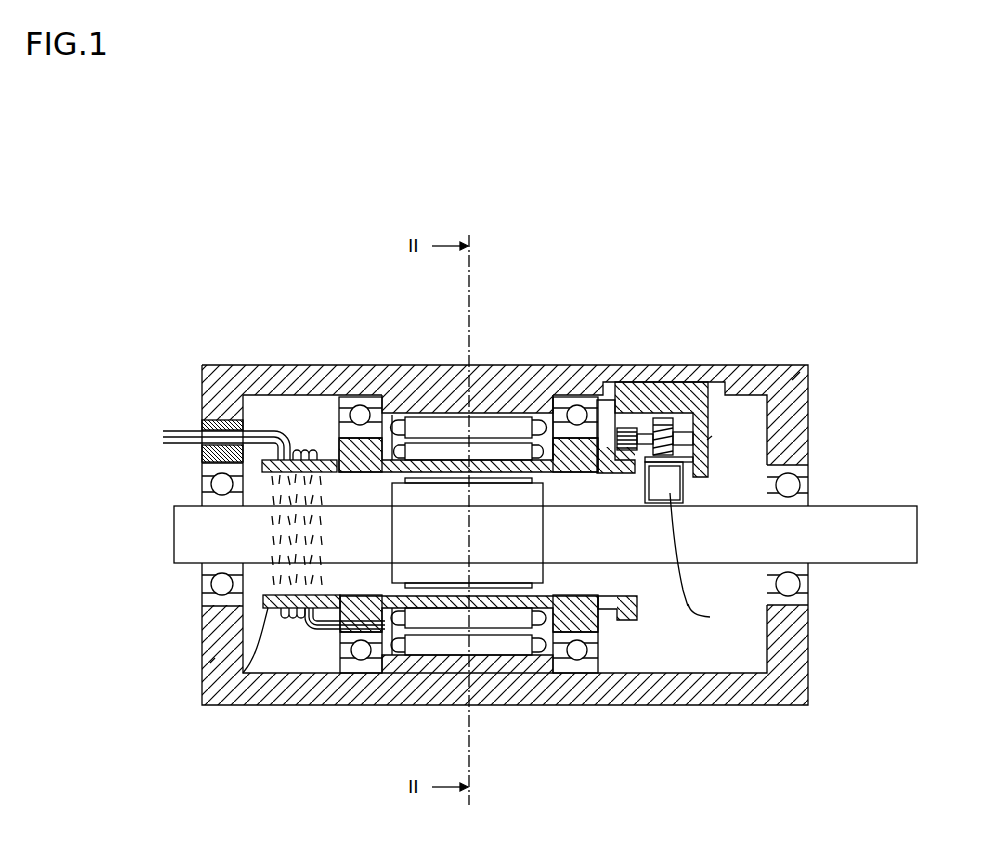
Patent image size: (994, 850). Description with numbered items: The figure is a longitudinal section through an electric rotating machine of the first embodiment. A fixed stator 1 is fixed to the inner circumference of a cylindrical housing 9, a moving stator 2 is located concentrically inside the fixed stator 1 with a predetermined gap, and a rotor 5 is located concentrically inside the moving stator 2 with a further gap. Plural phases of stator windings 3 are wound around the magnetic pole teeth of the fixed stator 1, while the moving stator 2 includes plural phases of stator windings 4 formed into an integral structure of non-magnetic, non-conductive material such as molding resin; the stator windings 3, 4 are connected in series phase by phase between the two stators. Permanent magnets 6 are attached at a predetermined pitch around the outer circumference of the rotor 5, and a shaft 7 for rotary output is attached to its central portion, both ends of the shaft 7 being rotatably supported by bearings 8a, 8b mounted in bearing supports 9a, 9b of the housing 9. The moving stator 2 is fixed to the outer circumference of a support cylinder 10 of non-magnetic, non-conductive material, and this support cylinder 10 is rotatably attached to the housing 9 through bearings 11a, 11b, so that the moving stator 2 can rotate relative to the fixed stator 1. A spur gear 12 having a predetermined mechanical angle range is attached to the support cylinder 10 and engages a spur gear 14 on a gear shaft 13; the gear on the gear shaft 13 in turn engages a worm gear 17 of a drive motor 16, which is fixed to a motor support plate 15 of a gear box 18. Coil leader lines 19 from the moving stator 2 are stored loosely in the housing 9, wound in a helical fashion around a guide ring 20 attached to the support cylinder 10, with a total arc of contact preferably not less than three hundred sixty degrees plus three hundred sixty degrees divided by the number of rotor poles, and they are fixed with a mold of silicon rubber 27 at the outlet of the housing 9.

The fixed stator 1 is at (418, 422).
The moving stator 2 is at (458, 450).
The stator windings 3 is at (556, 398).
The stator windings 4 is at (367, 395).
The rotor 5 is at (442, 572).
The permanent magnets 6 is at (507, 572).
The shaft 7 is at (867, 553).
The bearing 8a is at (803, 472).
The bearing 8b is at (207, 592).
The housing 9 is at (500, 375).
The bearing support 9a is at (792, 380).
The bearing support 9b is at (210, 663).
The support cylinder 10 is at (337, 395).
The bearing 11a is at (598, 395).
The bearing 11b is at (355, 660).
The spur gear 12 is at (688, 606).
The gear shaft 13 is at (703, 398).
The spur gear 14 is at (623, 426).
The motor support plate 15 is at (689, 462).
The drive motor 16 is at (710, 617).
The worm gear 17 is at (662, 430).
The gear box 18 is at (707, 440).
The coil leader lines 19 is at (261, 402).
The guide ring 20 is at (243, 673).
The silicon rubber 27 is at (213, 420).